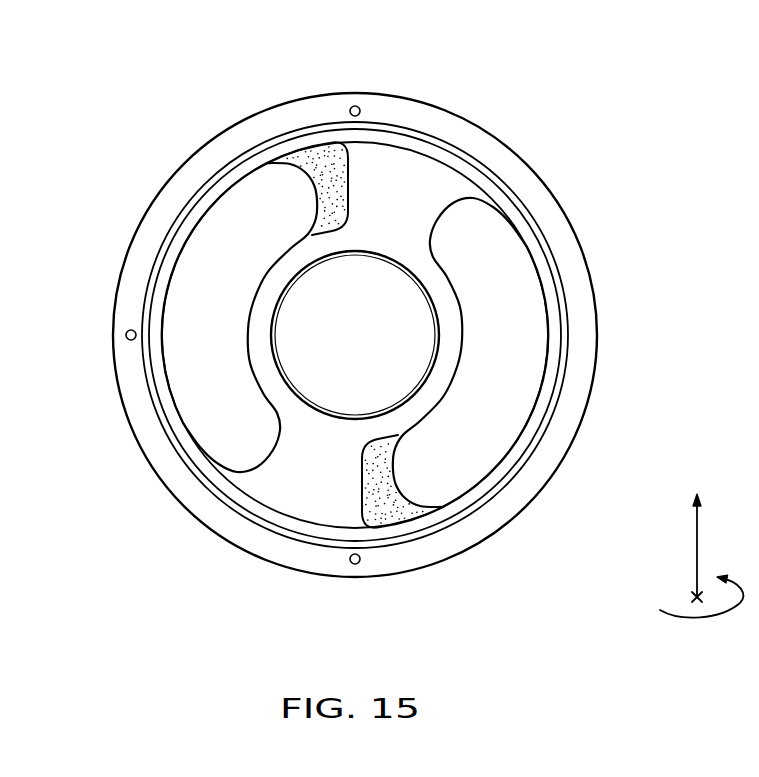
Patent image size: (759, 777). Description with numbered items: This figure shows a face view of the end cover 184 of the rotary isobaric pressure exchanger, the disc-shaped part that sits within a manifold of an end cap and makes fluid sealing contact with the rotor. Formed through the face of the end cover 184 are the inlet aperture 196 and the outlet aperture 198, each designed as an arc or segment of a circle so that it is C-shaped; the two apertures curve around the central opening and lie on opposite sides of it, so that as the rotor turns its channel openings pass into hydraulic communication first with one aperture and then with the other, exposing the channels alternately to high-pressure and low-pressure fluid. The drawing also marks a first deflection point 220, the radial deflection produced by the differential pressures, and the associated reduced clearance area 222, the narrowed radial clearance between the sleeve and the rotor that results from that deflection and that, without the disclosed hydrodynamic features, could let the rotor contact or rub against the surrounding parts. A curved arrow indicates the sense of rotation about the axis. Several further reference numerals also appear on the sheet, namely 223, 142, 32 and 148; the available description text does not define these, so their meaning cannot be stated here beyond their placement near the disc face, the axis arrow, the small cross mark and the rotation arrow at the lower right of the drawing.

The end cover 184 is at (308, 96).
The inlet aperture 196 is at (528, 382).
The outlet aperture 198 is at (200, 292).
The first deflection point 220 is at (355, 173).
The reduced clearance area 222 is at (341, 486).
The disc face 223 is at (417, 197).
The axis 142 is at (698, 550).
The pivot point 32 is at (690, 602).
The rotation direction 148 is at (688, 615).